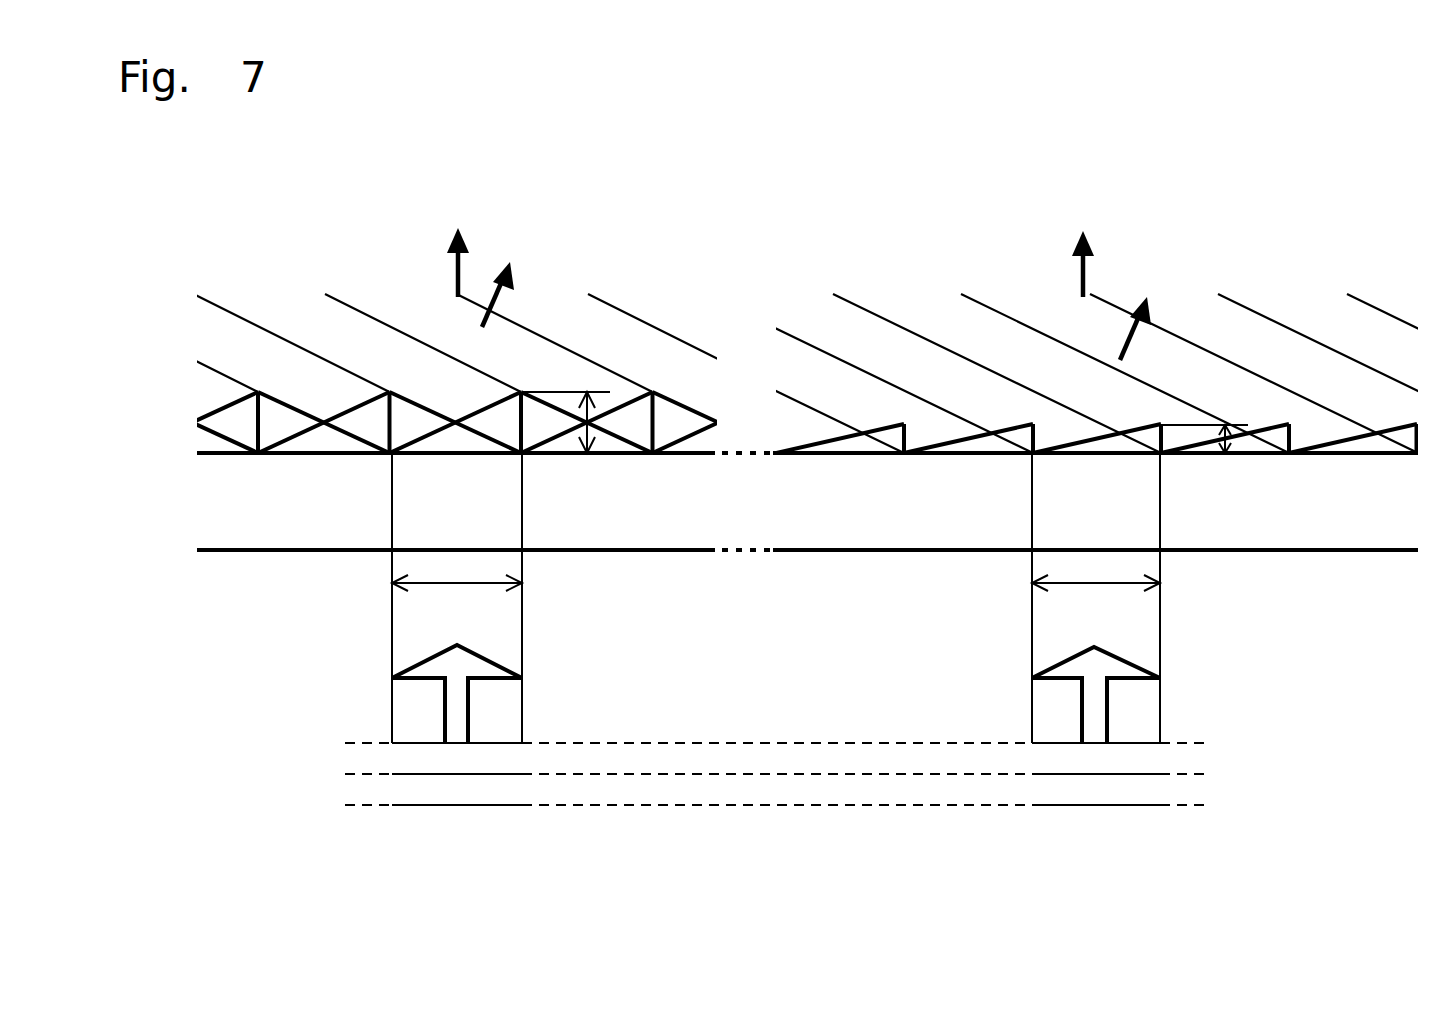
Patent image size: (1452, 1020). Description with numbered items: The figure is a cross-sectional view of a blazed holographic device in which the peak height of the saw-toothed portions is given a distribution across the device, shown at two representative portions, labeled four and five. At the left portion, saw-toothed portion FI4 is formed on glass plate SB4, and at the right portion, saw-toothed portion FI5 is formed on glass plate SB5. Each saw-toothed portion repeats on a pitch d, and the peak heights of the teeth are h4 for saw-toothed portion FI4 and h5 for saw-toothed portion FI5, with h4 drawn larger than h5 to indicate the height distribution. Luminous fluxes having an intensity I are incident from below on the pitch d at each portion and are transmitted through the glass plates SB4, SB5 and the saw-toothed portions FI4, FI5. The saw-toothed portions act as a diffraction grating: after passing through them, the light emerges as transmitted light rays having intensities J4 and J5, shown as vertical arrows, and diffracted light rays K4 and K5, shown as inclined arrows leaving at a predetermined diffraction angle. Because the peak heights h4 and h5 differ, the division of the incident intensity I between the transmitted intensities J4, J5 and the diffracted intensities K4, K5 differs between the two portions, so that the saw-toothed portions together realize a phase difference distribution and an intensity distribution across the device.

The transmitted light ray intensity J4 is at (453, 277).
The diffracted light ray K4 is at (500, 300).
The peak height of saw-toothed portion h4 is at (597, 437).
The saw-toothed portion FI4 is at (522, 453).
The glass plate SB4 is at (457, 486).
The pitch d is at (490, 588).
The intensity of incident light I is at (458, 732).
The transmitted light ray intensity J5 is at (1082, 273).
The diffracted light ray K5 is at (1130, 340).
The peak height of saw-toothed portion h5 is at (1237, 443).
The saw-toothed portion FI5 is at (1160, 453).
The glass plate SB5 is at (1095, 488).